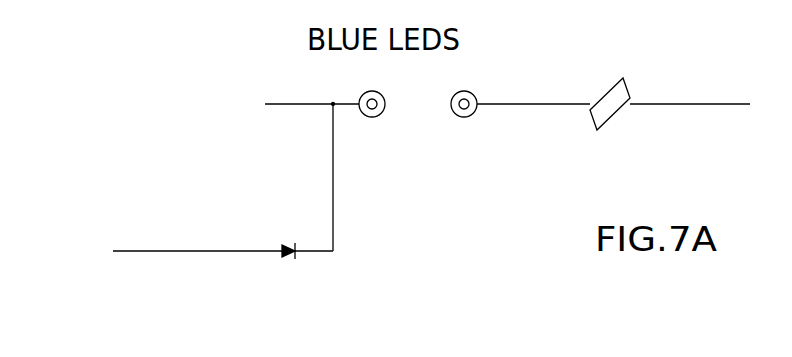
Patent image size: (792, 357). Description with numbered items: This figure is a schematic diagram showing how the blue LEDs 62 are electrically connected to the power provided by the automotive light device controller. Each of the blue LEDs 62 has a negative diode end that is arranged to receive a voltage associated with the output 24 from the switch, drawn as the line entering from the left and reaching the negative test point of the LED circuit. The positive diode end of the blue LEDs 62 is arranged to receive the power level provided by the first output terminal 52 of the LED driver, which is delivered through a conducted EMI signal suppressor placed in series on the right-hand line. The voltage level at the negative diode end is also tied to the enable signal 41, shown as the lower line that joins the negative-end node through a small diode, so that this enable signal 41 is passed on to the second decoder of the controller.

The output 24 is at (290, 168).
The enable signal 41 is at (207, 244).
The first output terminal 52 is at (682, 101).
The blue LEDs 62 is at (503, 62).